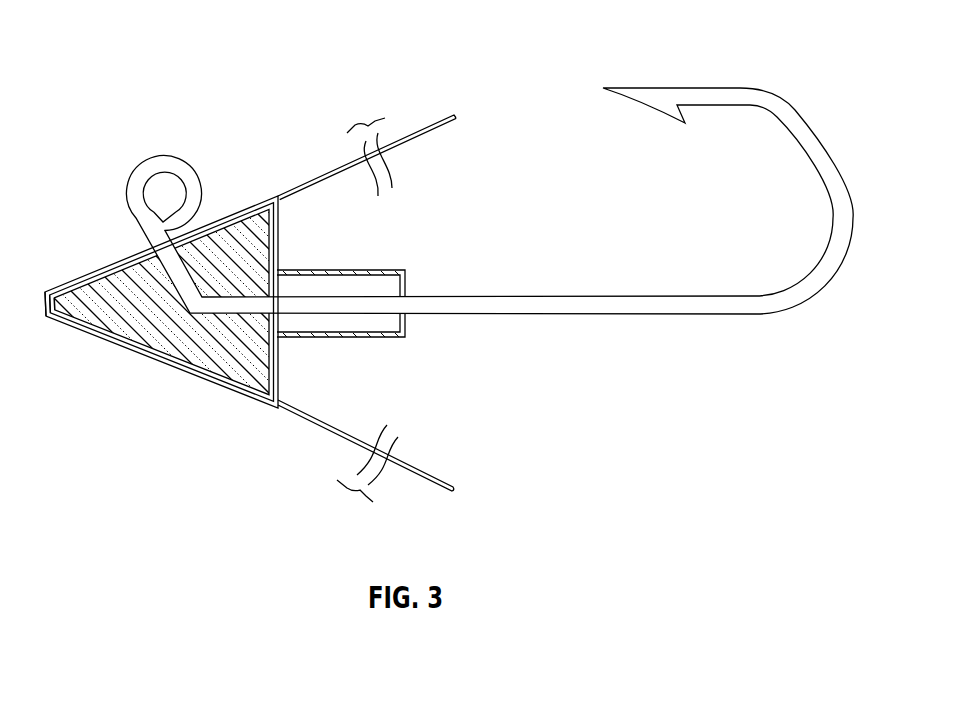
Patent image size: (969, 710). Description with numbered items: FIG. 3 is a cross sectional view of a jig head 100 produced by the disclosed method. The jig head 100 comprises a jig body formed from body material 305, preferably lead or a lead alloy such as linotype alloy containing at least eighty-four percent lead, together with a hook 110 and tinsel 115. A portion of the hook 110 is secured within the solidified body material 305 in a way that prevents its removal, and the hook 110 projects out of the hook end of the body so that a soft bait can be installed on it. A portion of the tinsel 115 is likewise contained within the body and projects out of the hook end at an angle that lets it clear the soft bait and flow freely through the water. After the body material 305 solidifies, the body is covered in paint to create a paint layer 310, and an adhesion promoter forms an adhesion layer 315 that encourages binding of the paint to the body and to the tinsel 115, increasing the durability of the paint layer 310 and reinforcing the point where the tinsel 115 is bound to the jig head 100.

The jig head 100 is at (121, 51).
The hook 110 is at (806, 290).
The tinsel 115 is at (445, 481).
The body material 305 is at (188, 345).
The paint layer 310 is at (252, 208).
The adhesion layer 315 is at (93, 270).